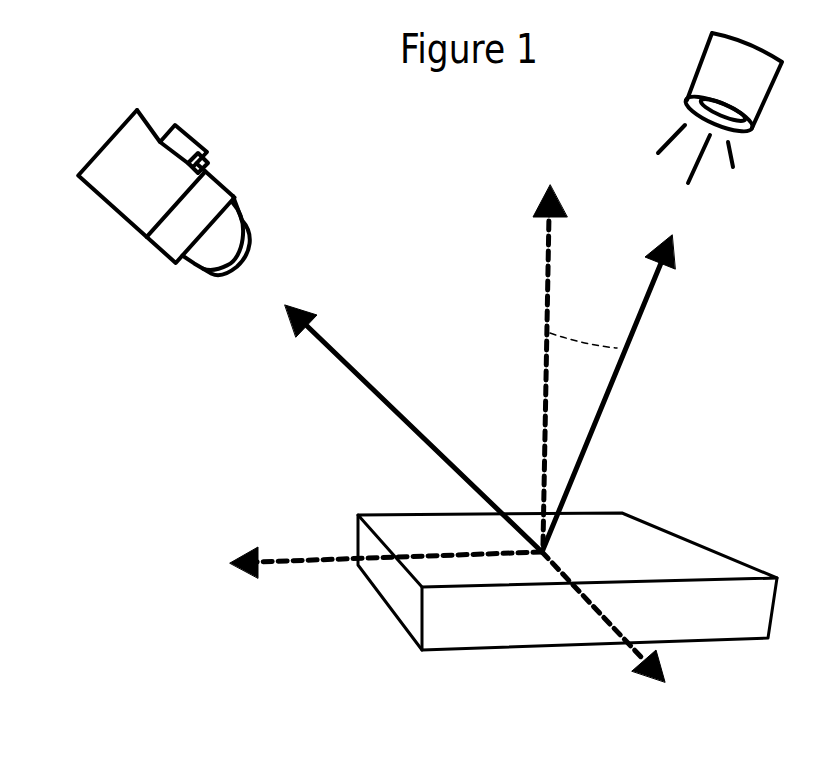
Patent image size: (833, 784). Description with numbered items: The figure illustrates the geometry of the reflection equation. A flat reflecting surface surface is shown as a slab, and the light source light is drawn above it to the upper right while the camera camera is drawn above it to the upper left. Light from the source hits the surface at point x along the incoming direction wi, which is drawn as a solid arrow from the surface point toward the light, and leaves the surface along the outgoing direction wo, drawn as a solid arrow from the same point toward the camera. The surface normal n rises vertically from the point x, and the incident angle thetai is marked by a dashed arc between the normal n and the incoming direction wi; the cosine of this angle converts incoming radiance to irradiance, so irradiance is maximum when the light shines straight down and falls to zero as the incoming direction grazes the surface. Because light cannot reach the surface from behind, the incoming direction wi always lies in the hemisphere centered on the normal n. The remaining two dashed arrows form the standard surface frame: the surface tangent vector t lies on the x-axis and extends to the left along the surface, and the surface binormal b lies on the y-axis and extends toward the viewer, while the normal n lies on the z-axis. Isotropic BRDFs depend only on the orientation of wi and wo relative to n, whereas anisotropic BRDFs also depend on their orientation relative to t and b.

The surface normal n is at (550, 322).
The surface tangent vector t is at (362, 566).
The surface binormal b is at (621, 651).
The outgoing direction wo is at (411, 428).
The incoming direction wi is at (608, 393).
The incident angle thetai is at (583, 316).
The element camera is at (174, 202).
The element light is at (720, 108).
The element surface is at (567, 581).